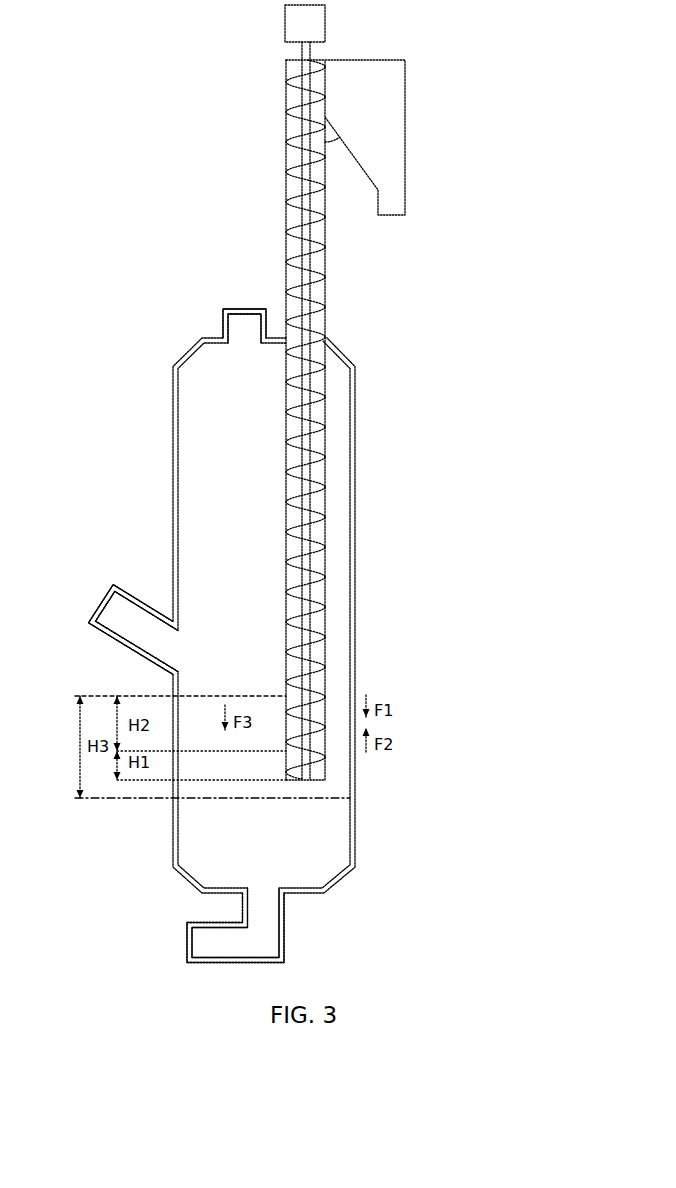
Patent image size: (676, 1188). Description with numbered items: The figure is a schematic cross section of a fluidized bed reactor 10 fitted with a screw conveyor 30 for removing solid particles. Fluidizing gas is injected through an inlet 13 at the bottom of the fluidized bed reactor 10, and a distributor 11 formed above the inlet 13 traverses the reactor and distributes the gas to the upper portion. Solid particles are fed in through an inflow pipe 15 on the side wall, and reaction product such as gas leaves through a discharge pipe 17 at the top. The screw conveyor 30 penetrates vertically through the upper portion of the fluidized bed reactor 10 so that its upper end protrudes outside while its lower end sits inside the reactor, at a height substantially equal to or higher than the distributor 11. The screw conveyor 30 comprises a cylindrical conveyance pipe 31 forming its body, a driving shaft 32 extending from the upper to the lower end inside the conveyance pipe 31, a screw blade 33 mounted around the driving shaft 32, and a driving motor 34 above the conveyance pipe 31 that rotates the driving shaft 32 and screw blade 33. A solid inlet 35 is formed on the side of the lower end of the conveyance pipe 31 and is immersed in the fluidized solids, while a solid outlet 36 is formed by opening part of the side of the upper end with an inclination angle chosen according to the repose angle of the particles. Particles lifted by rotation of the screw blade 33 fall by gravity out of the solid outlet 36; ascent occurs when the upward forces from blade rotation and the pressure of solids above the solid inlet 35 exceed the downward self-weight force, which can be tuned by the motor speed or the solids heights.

The fluidized bed reactor 10 is at (173, 378).
The distributor 11 is at (226, 800).
The inlet 13 is at (194, 943).
The inflow pipe 15 is at (108, 608).
The discharge pipe 17 is at (242, 303).
The screw conveyor 30 is at (389, 432).
The conveyance pipe 31 is at (325, 300).
The driving shaft 32 is at (325, 275).
The screw blade 33 is at (325, 252).
The driving motor 34 is at (325, 22).
The solid inlet 35 is at (295, 757).
The solid outlet 36 is at (370, 137).